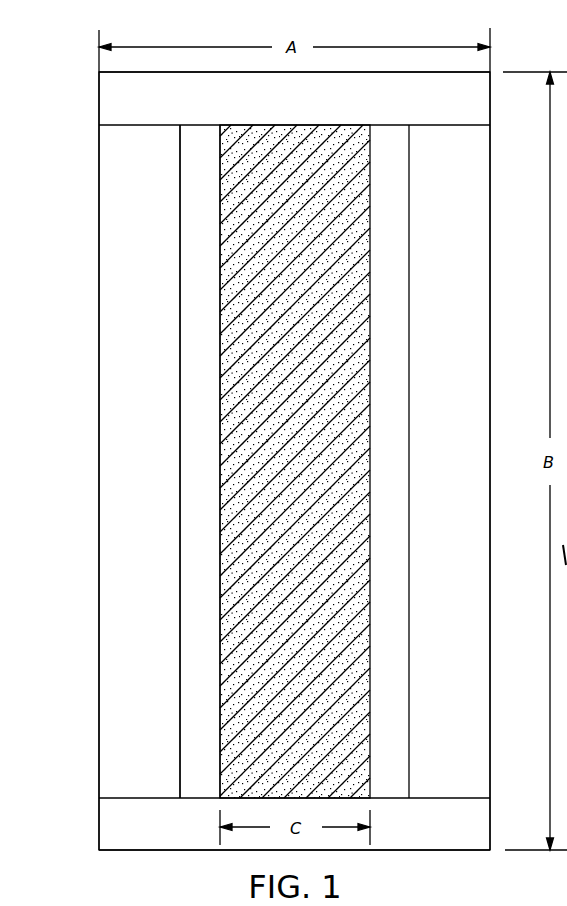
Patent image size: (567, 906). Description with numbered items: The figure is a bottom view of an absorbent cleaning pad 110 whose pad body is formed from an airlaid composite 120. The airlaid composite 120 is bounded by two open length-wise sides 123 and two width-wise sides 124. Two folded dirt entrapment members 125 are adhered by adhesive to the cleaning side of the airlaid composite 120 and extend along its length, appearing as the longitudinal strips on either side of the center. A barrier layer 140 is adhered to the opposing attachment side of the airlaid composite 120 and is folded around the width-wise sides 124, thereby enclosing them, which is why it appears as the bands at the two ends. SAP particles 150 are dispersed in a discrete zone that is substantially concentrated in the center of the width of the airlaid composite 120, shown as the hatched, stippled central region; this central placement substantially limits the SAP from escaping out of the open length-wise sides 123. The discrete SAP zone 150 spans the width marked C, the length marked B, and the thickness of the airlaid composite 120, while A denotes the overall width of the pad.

The absorbent cleaning pad 110 is at (90, 63).
The airlaid composite 120 is at (205, 170).
The length-wise sides 123 is at (99, 238).
The width-wise sides 124 is at (212, 72).
The folded dirt entrapment members 125 is at (125, 552).
The barrier layer 140 is at (115, 98).
The SAP particles 150 is at (303, 157).